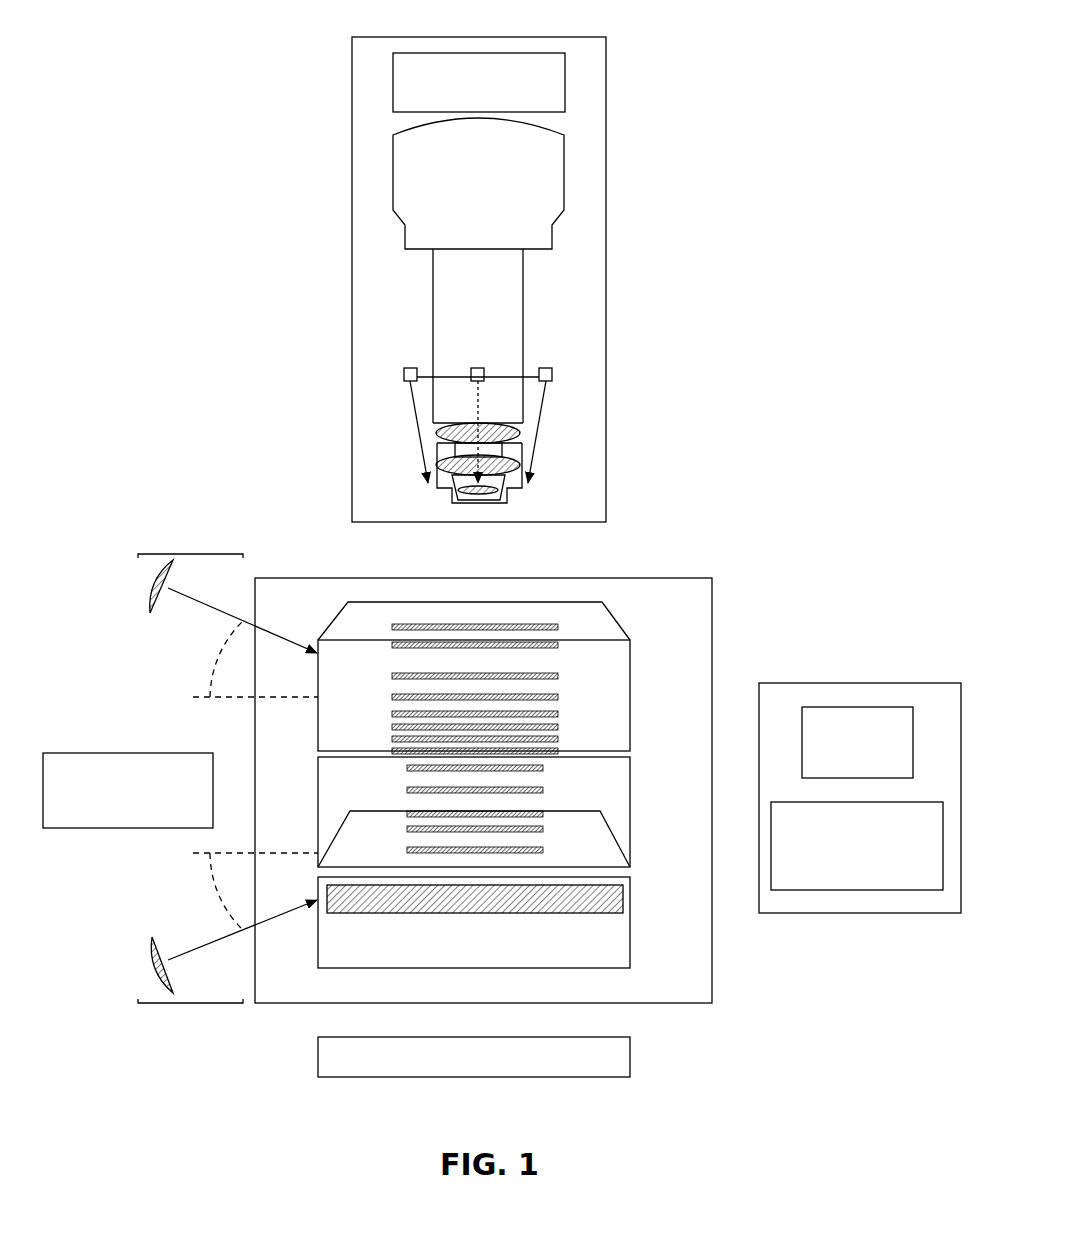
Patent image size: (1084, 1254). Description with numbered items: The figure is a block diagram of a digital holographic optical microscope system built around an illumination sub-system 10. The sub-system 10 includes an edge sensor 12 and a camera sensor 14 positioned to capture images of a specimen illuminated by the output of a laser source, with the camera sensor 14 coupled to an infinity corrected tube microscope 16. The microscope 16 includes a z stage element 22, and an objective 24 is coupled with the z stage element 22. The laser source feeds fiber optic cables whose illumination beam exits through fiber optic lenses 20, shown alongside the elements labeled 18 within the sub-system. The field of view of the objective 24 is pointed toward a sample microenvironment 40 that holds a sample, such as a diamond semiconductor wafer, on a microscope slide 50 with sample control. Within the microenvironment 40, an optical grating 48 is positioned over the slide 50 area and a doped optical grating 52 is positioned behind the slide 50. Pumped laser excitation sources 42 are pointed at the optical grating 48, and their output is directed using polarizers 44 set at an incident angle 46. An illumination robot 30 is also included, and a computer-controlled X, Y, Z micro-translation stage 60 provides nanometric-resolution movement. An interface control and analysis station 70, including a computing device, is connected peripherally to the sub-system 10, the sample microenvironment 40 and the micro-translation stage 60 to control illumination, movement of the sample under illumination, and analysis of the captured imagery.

The illumination sub-system 10 is at (542, 37).
The edge sensor 12 is at (393, 90).
The camera sensor 14 is at (393, 182).
The infinity corrected tube microscope 16 is at (527, 305).
The light sources 18 is at (539, 372).
The fiber optic lenses 20 is at (535, 412).
The z stage element 22 is at (500, 395).
The objective 24 is at (490, 451).
The illumination robot 30 is at (128, 753).
The sample microenvironment 40 is at (475, 577).
The pumped laser excitation sources 42 is at (192, 553).
The polarizers 44 is at (152, 582).
The incident angle 46 is at (213, 662).
The optical grating 48 is at (630, 695).
The microscope slide 50 is at (630, 812).
The doped optical grating 52 is at (630, 920).
The micro-translation stage 60 is at (630, 1053).
The interface control and analysis station 70 is at (858, 682).